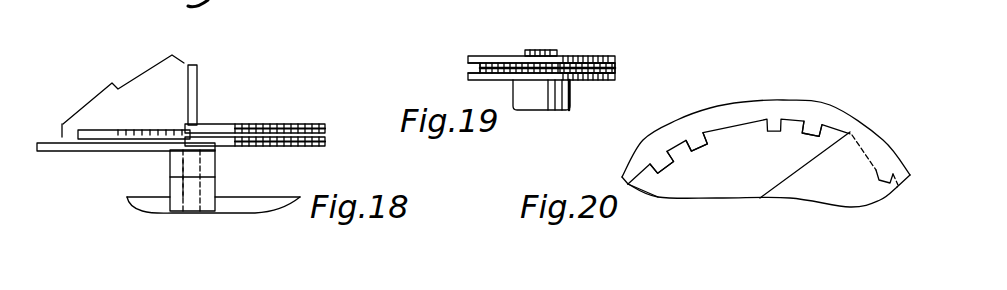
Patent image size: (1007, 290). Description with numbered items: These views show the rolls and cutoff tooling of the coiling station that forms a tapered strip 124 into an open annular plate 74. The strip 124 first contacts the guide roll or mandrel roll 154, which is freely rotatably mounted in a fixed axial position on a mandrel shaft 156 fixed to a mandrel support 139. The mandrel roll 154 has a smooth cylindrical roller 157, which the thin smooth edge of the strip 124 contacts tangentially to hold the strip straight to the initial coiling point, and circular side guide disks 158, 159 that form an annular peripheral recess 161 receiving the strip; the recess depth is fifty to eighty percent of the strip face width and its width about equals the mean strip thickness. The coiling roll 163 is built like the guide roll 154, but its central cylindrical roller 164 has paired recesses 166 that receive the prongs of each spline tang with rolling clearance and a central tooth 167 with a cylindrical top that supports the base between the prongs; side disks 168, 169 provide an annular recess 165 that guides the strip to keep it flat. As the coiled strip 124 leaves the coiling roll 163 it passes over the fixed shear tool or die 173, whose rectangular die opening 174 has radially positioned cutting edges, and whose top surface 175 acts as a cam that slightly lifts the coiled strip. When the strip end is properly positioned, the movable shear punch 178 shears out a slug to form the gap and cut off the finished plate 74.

In FIG. 18, the strip 124 is at (57, 143).
In FIG. 18, the movable shear punch 178 is at (197, 80).
In FIG. 18, the top surface of die 175 is at (207, 130).
In FIG. 18, the open annular plate 74 is at (277, 128).
In FIG. 18, the shear tool or die 173 is at (215, 167).
In FIG. 18, the rectangular die opening 174 is at (200, 168).
In FIG. 19, the smooth cylindrical roller 157 is at (498, 68).
In FIG. 19, the guide roll or mandrel roll 154 is at (601, 52).
In FIG. 19, the side guide disk 159 is at (617, 77).
In FIG. 19, the side guide disk 158 is at (617, 64).
In FIG. 19, the annular peripheral recess 161 is at (472, 70).
In FIG. 19, the mandrel shaft 156 is at (535, 52).
In FIG. 19, the mandrel support 139 is at (533, 92).
In FIG. 20, the coiling roll 163 is at (887, 132).
In FIG. 20, the central cylindrical roller 164 is at (748, 150).
In FIG. 20, the side disk 169 is at (830, 178).
In FIG. 20, the recesses 166 is at (812, 130).
In FIG. 20, the central tooth 167 is at (682, 147).
In FIG. 20, the annular recess 165 is at (664, 145).
In FIG. 20, the side disk 168 is at (637, 170).